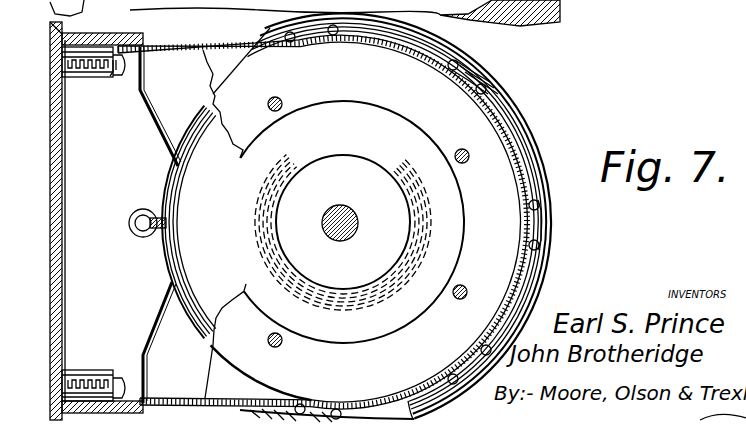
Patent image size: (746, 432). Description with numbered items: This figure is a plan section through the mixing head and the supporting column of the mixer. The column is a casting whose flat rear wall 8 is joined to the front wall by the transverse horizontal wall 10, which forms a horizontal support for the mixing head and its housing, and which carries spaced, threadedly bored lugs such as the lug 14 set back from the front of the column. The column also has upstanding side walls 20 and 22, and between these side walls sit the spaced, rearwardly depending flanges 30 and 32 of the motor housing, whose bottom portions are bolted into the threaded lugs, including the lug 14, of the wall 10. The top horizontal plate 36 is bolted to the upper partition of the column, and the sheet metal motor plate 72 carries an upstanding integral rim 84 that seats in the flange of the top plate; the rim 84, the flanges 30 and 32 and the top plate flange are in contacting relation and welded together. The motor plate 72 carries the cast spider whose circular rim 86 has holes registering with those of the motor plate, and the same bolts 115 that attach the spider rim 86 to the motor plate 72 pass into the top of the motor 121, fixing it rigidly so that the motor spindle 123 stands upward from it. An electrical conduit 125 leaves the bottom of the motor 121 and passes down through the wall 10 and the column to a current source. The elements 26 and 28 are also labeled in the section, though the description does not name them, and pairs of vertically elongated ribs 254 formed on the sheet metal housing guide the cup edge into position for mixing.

The flat rear wall 8 is at (50, 185).
The transverse horizontal wall 10 is at (88, 268).
The threadedly bored lug 14 is at (85, 370).
The upstanding side wall 20 is at (143, 40).
The upstanding side wall 22 is at (100, 47).
The band lower run 26 is at (183, 398).
The band 28 is at (183, 44).
The rearwardly depending flange 30 is at (124, 376).
The rearwardly depending flange 32 is at (112, 78).
The top horizontal plate 36 is at (118, 74).
The sheet metal motor plate 72 is at (221, 46).
The upstanding integral rim 84 is at (508, 138).
The circular rim 86 is at (458, 115).
The bolts 115 is at (460, 285).
The motor 121 is at (212, 268).
The motor spindle 123 is at (343, 206).
The electrical conduit 125 is at (155, 210).
The vertically elongated ribs 254 is at (333, 38).